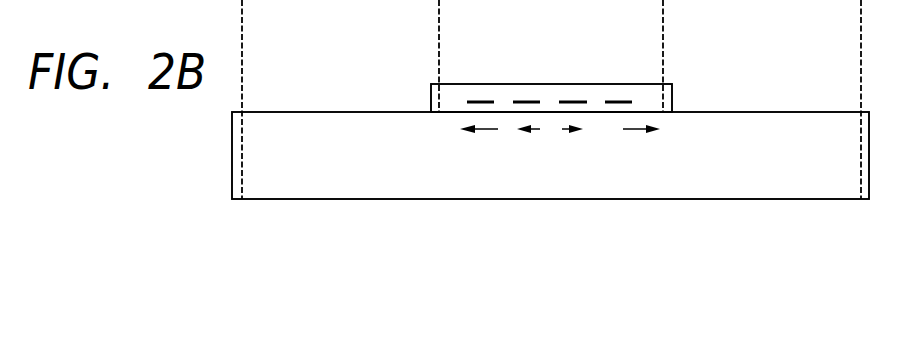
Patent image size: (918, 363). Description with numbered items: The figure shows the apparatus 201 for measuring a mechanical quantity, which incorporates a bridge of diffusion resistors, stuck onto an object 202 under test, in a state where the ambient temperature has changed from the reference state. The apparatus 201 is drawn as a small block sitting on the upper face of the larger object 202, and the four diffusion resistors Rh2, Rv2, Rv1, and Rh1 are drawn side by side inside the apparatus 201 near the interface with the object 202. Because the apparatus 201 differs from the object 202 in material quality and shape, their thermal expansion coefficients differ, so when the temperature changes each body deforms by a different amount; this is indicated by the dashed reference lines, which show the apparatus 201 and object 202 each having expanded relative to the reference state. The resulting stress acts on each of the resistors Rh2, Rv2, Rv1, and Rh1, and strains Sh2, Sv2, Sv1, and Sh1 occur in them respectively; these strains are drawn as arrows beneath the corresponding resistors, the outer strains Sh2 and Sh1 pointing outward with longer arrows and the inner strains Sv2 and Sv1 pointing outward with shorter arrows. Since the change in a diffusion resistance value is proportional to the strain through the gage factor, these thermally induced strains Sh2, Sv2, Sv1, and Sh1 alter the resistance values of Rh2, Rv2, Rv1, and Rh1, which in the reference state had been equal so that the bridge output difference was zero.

The apparatus for measuring a mechanical quantity 201 is at (578, 74).
The object under test 202 is at (550, 120).
The diffusion resistor Rh2 is at (482, 100).
The diffusion resistor Rv2 is at (527, 100).
The diffusion resistor Rv1 is at (573, 100).
The diffusion resistor Rh1 is at (620, 100).
The strain Sh2 is at (479, 148).
The strain Sv2 is at (528, 148).
The strain Sv1 is at (574, 148).
The strain Sh1 is at (641, 148).